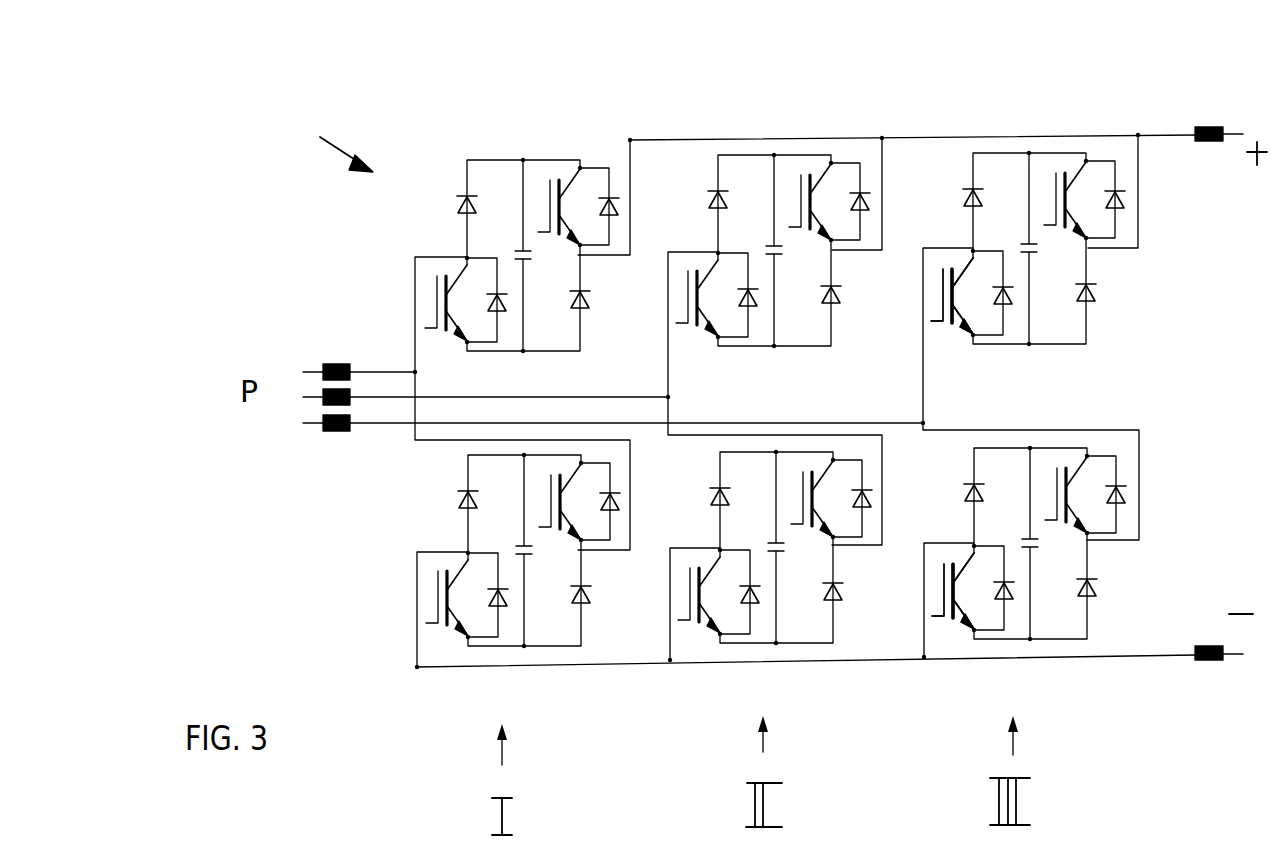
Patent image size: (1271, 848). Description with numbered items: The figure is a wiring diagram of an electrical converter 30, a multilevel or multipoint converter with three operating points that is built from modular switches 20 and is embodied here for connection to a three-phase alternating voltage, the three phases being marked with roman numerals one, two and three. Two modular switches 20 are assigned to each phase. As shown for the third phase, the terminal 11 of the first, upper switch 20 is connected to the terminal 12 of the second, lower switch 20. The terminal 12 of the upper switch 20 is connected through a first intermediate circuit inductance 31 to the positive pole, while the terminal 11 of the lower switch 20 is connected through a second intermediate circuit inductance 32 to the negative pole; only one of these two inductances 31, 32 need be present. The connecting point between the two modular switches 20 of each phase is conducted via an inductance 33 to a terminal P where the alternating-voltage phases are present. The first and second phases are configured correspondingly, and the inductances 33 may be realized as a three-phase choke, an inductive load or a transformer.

The terminal 11 is at (920, 322).
The terminal 12 is at (1139, 212).
The modular switch 20 is at (500, 193).
The electrical converter 30 is at (329, 131).
The first intermediate circuit inductance 31 is at (1218, 127).
The second intermediate circuit inductance 32 is at (1222, 660).
The inductance 33 is at (335, 432).